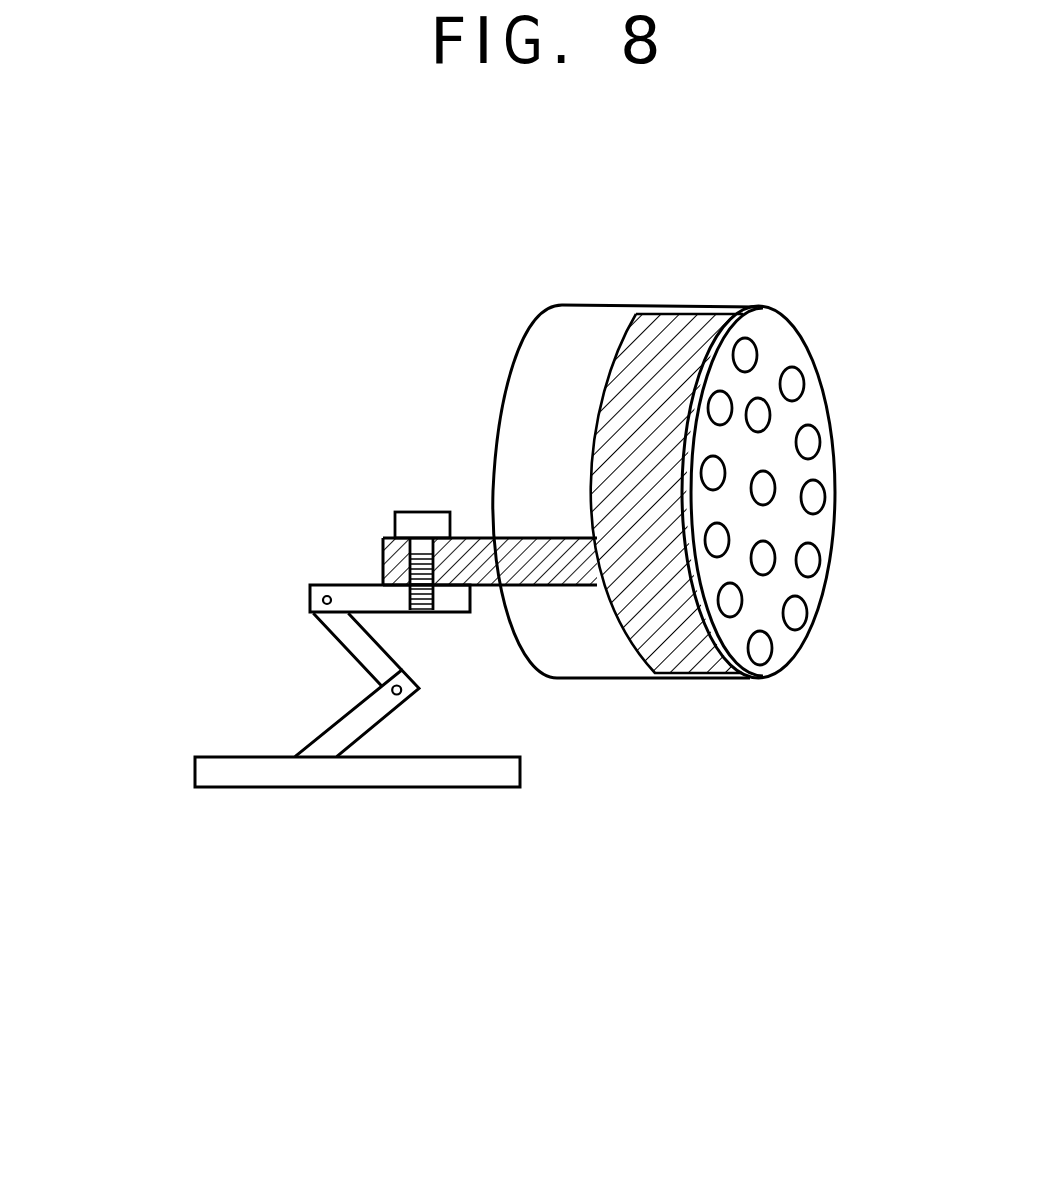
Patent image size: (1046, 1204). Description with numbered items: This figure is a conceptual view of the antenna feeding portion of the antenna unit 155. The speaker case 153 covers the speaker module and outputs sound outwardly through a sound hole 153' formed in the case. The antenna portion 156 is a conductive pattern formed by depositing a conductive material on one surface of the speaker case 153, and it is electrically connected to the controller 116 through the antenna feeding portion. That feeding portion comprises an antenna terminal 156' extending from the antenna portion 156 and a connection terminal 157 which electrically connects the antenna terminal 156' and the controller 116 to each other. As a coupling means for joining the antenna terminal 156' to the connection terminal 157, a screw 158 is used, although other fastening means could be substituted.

The speaker case 153 is at (700, 485).
The sound hole 153' is at (820, 501).
The antenna unit 155 is at (673, 930).
The antenna portion 156 is at (650, 616).
The antenna terminal 156' is at (493, 735).
The connection terminal 157 is at (365, 653).
The screw 158 is at (418, 613).
The controller 116 is at (210, 773).